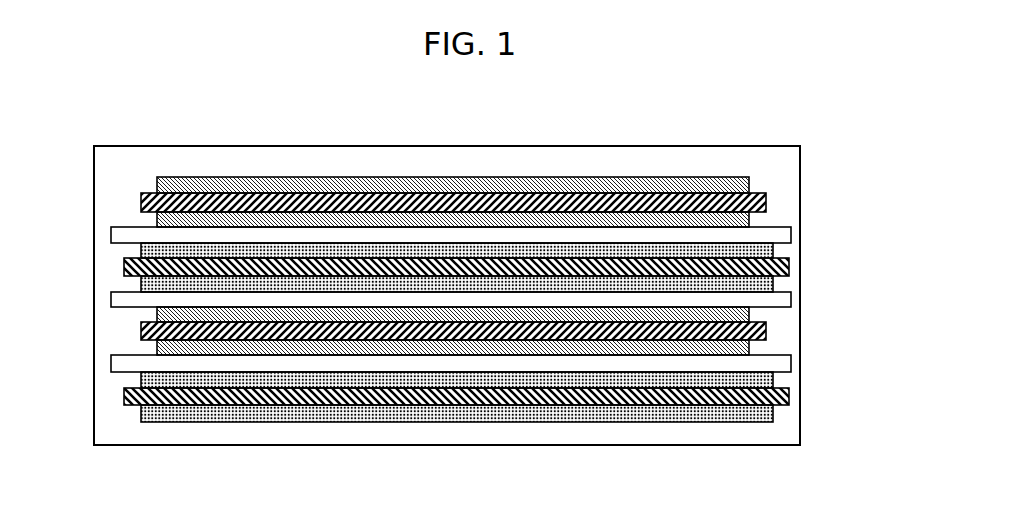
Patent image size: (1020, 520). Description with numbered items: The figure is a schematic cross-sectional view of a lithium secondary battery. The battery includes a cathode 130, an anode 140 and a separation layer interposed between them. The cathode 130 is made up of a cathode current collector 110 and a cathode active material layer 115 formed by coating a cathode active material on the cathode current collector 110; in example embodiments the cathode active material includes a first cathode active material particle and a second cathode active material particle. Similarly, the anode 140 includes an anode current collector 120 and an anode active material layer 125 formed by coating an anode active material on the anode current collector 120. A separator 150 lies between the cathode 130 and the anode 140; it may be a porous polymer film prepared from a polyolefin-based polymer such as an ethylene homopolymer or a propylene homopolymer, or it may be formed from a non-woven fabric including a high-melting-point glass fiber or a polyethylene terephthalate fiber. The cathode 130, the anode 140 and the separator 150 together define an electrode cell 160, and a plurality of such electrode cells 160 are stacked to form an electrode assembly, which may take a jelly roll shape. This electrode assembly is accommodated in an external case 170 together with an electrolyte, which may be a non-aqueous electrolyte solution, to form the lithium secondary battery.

The cathode current collector 110 is at (766, 202).
The cathode active material layer 115 is at (749, 185).
The anode current collector 120 is at (789, 267).
The anode active material layer 125 is at (773, 250).
The cathode 130 is at (124, 227).
The anode 140 is at (116, 247).
The separator 150 is at (111, 236).
The electrode cell 160 is at (878, 175).
The external case 170 is at (215, 445).